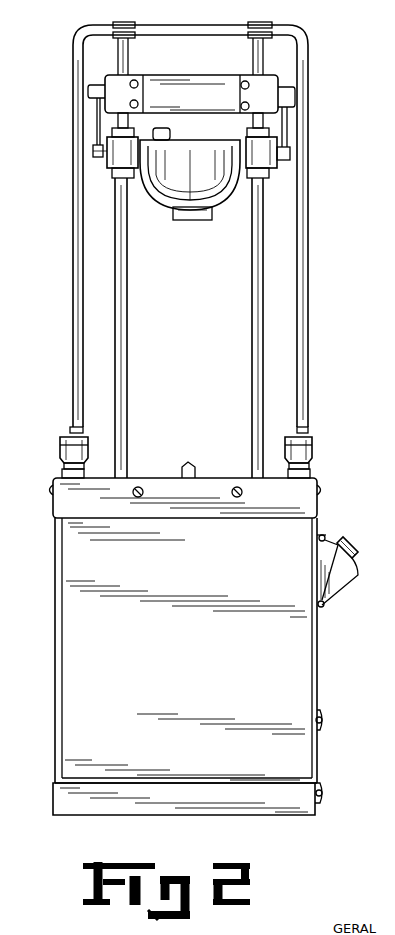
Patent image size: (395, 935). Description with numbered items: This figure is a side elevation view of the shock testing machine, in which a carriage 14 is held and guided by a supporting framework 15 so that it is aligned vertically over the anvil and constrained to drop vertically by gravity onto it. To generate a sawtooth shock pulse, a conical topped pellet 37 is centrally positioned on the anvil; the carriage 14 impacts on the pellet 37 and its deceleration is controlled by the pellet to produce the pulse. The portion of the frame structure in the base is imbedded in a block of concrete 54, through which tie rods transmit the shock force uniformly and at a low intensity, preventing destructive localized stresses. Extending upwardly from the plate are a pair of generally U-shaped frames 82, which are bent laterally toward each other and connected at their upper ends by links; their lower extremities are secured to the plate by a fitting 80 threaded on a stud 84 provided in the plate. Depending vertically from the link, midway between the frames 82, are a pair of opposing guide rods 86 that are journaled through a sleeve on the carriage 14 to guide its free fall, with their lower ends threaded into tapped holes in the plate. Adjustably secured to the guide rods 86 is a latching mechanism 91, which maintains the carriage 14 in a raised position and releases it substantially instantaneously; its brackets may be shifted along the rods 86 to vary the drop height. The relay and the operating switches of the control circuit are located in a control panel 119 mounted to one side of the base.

The carriage 14 is at (101, 158).
The supporting framework 15 is at (214, 226).
The conical topped pellet 37 is at (188, 465).
The block of concrete 54 is at (67, 607).
The fitting 80 is at (310, 453).
The U-shaped frames 82 is at (307, 318).
The stud 84 is at (310, 475).
The guide rods 86 is at (127, 235).
The latching mechanism 91 is at (280, 82).
The control panel 119 is at (353, 570).